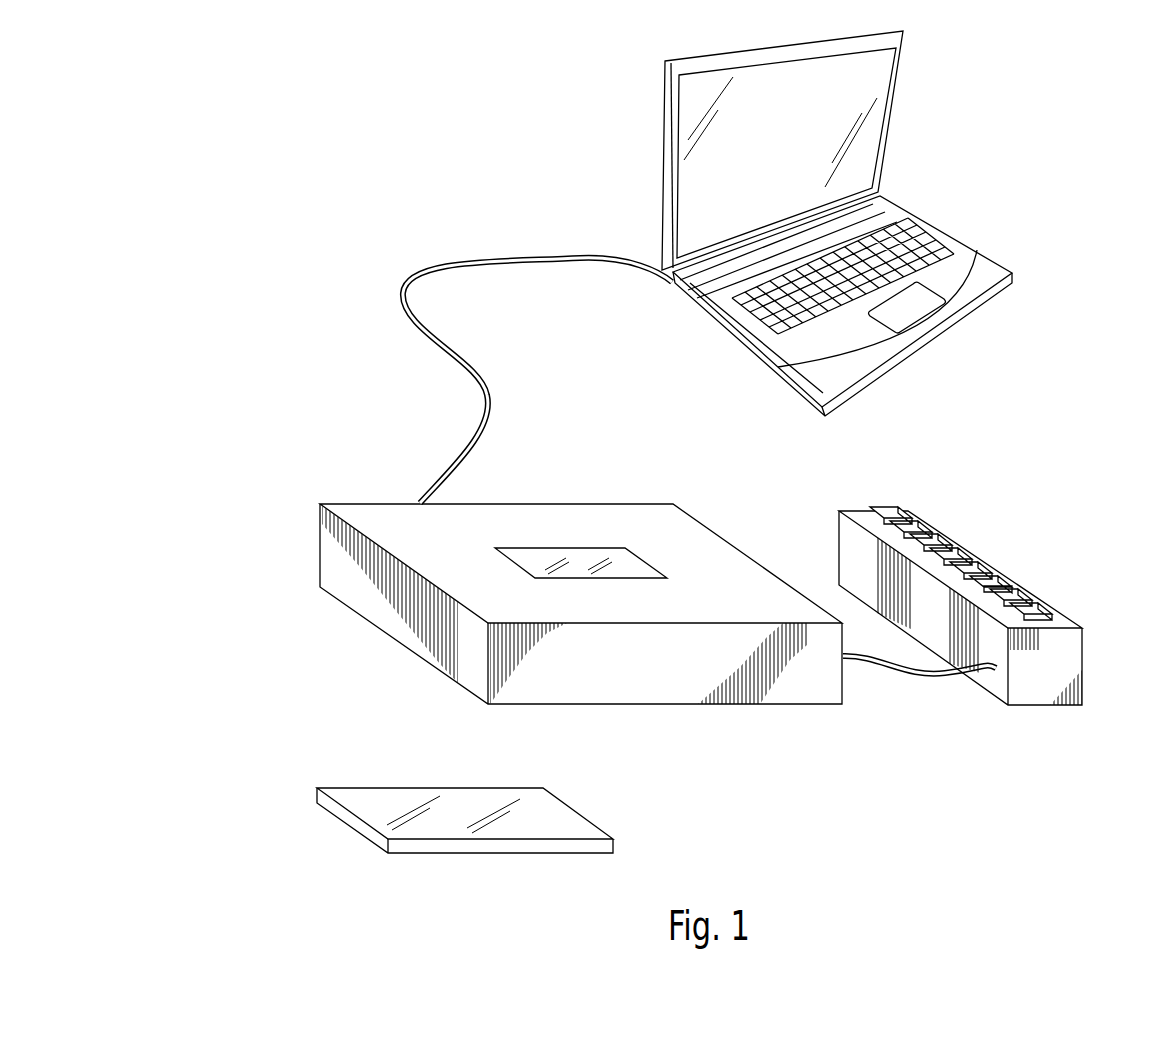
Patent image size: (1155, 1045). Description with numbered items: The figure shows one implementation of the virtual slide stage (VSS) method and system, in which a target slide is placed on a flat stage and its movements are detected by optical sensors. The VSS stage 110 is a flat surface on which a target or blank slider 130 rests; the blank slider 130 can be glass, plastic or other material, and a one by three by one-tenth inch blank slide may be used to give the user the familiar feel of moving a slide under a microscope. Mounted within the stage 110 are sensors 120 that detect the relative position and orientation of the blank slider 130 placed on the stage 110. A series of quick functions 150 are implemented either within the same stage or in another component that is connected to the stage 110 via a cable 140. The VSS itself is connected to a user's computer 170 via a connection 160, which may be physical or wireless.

The VSS stage 110 is at (304, 542).
The sensors 120 is at (653, 556).
The blank slider 130 is at (340, 779).
The cable 140 is at (915, 689).
The quick functions 150 is at (1021, 572).
The connection 160 is at (509, 382).
The user's computer 170 is at (979, 216).